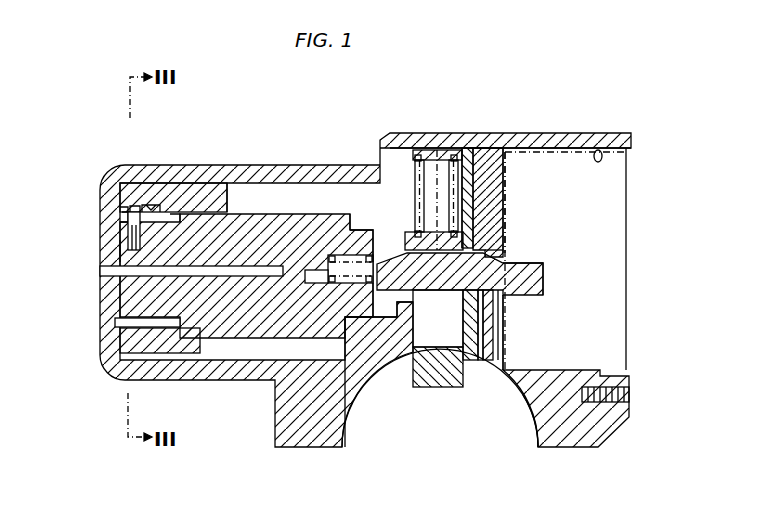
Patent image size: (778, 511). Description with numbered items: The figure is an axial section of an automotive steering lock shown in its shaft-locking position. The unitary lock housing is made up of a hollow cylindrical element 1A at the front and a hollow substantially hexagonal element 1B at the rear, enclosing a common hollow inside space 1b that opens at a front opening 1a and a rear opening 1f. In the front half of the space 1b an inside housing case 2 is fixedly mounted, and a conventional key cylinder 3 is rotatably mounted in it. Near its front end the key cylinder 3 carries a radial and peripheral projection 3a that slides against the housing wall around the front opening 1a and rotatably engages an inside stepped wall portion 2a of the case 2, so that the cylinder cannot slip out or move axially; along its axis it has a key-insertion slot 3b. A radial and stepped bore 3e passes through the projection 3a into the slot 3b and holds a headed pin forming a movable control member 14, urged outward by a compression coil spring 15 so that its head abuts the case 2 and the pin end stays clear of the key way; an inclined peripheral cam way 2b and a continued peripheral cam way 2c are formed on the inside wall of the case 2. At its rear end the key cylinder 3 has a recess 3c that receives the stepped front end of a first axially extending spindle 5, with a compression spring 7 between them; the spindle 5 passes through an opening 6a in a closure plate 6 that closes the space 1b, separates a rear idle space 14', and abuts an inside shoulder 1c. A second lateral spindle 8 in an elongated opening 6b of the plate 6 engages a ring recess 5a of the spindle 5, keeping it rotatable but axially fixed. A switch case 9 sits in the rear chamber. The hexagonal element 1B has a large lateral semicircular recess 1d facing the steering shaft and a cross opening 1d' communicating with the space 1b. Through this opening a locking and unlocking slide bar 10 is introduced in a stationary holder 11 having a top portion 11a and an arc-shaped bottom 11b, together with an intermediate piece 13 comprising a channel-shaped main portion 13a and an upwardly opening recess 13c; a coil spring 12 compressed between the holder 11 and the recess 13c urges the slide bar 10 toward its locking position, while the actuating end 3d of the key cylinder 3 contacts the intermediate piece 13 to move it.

The hollow cylindrical element 1A is at (232, 382).
The hollow substantially hexagonal element 1B is at (562, 448).
The front opening 1a is at (103, 240).
The hollow inside space 1b is at (310, 190).
The inside shoulder 1c is at (513, 370).
The lateral semicircular recess 1d is at (520, 436).
The cross opening 1d' is at (440, 401).
The rear opening 1f is at (631, 283).
The inside housing case 2 is at (258, 198).
The inside stepped wall portion 2a is at (171, 330).
The inclined peripheral cam way 2b is at (126, 205).
The continued peripheral cam way 2c is at (152, 205).
The key cylinder 3 is at (230, 215).
The radial and peripheral projection 3a is at (176, 212).
The key-insertion slot 3b is at (110, 312).
The recess 3c is at (356, 245).
The actuating end 3d is at (333, 240).
The radial and stepped bore 3e is at (122, 247).
The first axially extending spindle 5 is at (545, 285).
The ring recess 5a is at (543, 268).
The closure plate 6 is at (490, 180).
The opening 6a is at (505, 255).
The elongated opening 6b is at (495, 315).
The compression spring 7 is at (314, 306).
The second lateral spindle 8 is at (487, 360).
The switch case 9 is at (632, 204).
The locking and unlocking slide bar 10 is at (437, 388).
The stationary holder 11 is at (482, 180).
The top portion 11a is at (470, 213).
The arc-shaped bottom 11b is at (400, 348).
The coil spring 12 is at (483, 146).
The intermediate piece 13 is at (432, 205).
The channel-shaped main portion 13a is at (390, 205).
The upwardly opening recess 13c is at (503, 200).
The movable control member 14 is at (91, 190).
The rear idle space 14' is at (607, 126).
The compression coil spring 15 is at (120, 277).